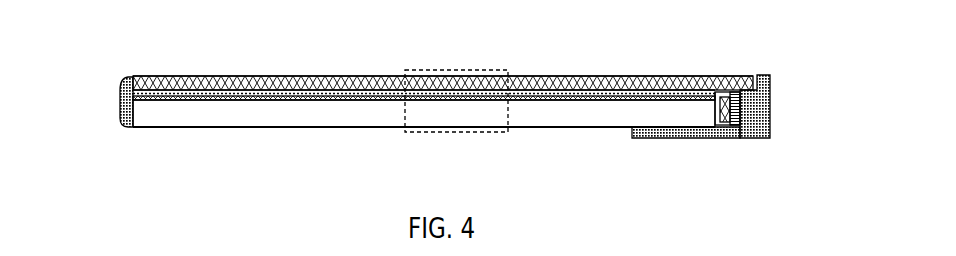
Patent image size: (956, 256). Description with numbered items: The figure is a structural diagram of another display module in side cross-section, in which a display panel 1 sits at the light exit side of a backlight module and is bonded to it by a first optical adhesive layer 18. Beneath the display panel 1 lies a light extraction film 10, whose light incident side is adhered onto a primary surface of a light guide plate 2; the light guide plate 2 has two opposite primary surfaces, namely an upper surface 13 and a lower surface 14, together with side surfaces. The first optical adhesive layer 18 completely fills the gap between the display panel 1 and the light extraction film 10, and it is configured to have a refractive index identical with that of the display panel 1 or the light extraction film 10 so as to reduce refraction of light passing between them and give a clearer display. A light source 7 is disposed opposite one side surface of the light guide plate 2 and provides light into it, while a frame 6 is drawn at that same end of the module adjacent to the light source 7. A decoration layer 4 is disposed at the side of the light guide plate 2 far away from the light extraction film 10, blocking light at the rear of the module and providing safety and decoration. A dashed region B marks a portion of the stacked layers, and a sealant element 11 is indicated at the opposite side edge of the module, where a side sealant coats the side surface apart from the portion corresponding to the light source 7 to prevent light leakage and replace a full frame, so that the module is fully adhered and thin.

The display panel 1 is at (728, 79).
The light guide plate 2 is at (580, 112).
The decoration layer 4 is at (242, 128).
The frame 6 is at (772, 107).
The light source 7 is at (737, 137).
The light extraction film 10 is at (285, 85).
The side edge cap 11 is at (118, 90).
The upper surface 13 is at (558, 92).
The lower surface 14 is at (315, 128).
The first optical adhesive layer 18 is at (162, 87).
The detail region B is at (467, 132).